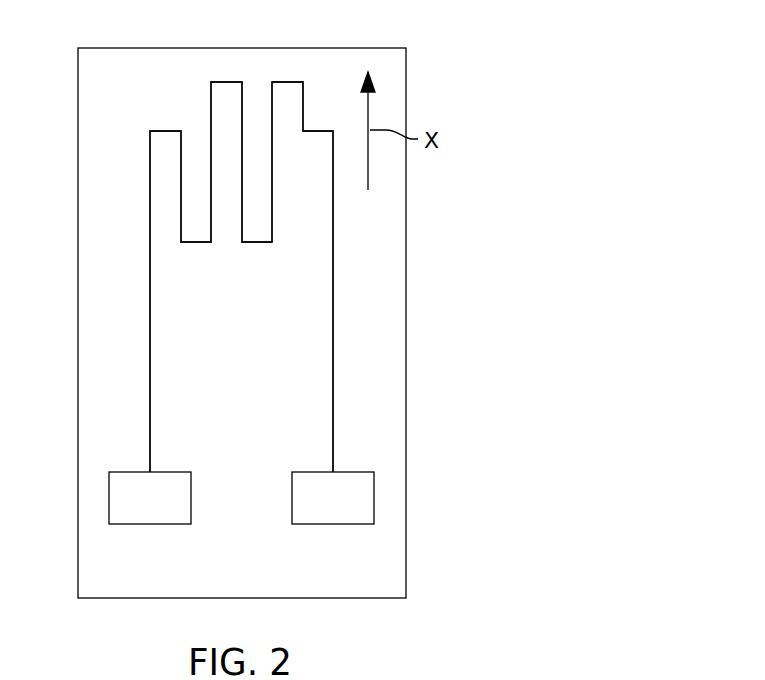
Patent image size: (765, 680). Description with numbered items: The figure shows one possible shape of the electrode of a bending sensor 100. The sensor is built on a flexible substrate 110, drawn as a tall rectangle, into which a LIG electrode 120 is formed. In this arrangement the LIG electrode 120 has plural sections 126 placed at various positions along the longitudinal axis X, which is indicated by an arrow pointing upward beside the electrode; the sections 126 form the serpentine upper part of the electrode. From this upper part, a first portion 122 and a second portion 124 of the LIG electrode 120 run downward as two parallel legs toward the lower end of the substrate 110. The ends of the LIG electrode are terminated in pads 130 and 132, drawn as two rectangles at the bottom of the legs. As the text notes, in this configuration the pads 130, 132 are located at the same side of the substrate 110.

The bending sensor 100 is at (584, 677).
The flexible substrate 110 is at (392, 574).
The LIG electrode 120 is at (212, 58).
The first portion 122 is at (150, 347).
The second portion 124 is at (333, 346).
The sections 126 is at (158, 167).
The pad 130 is at (123, 496).
The pad 132 is at (359, 496).